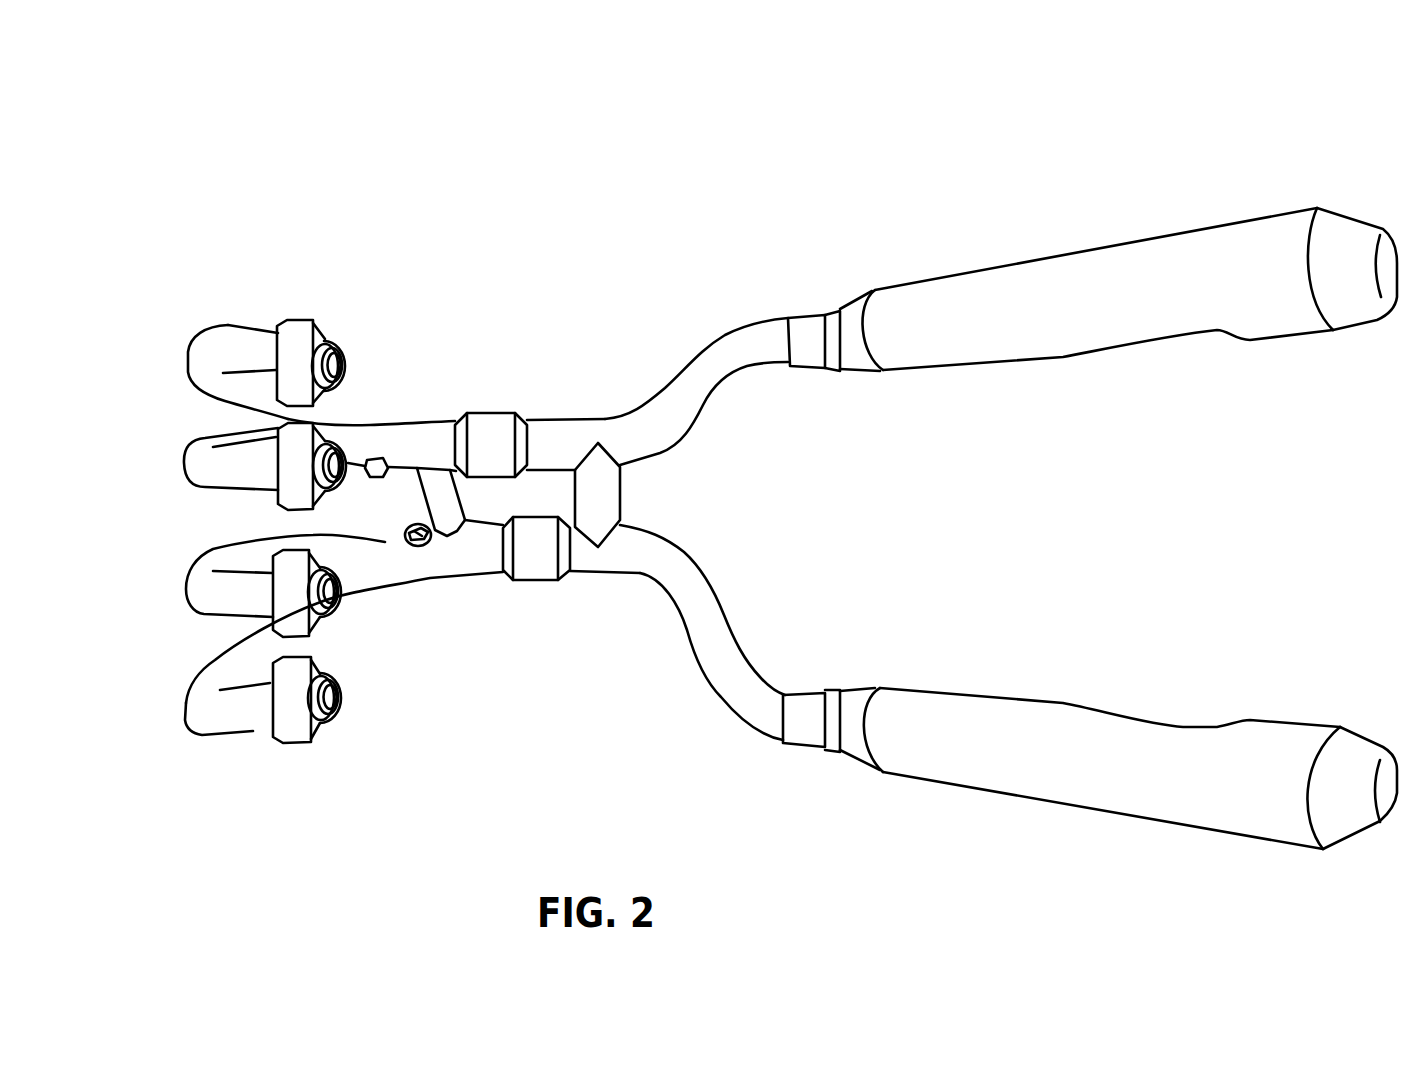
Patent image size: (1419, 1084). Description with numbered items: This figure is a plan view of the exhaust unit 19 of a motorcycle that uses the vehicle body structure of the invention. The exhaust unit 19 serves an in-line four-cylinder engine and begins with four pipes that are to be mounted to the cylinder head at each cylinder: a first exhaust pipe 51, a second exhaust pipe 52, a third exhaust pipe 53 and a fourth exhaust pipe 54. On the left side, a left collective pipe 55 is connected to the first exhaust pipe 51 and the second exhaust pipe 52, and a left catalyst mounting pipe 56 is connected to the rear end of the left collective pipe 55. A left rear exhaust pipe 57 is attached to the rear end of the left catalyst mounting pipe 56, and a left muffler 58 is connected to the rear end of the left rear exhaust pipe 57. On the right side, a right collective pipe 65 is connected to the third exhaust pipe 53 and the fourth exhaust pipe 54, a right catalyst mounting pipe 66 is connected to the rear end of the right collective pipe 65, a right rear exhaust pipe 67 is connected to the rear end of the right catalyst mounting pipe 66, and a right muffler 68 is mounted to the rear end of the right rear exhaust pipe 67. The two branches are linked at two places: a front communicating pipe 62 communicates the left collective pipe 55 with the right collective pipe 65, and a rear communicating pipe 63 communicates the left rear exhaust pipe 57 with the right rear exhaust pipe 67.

The exhaust unit 19 is at (455, 170).
The first exhaust pipe 51 is at (254, 733).
The second exhaust pipe 52 is at (203, 610).
The third exhaust pipe 53 is at (197, 450).
The fourth exhaust pipe 54 is at (240, 325).
The left collective pipe 55 is at (430, 583).
The left catalyst mounting pipe 56 is at (532, 582).
The left rear exhaust pipe 57 is at (690, 654).
The left muffler 58 is at (1070, 800).
The front communicating pipe 62 is at (430, 498).
The rear communicating pipe 63 is at (628, 486).
The right collective pipe 65 is at (397, 420).
The right catalyst mounting pipe 66 is at (492, 413).
The right rear exhaust pipe 67 is at (700, 352).
The right muffler 68 is at (1070, 252).